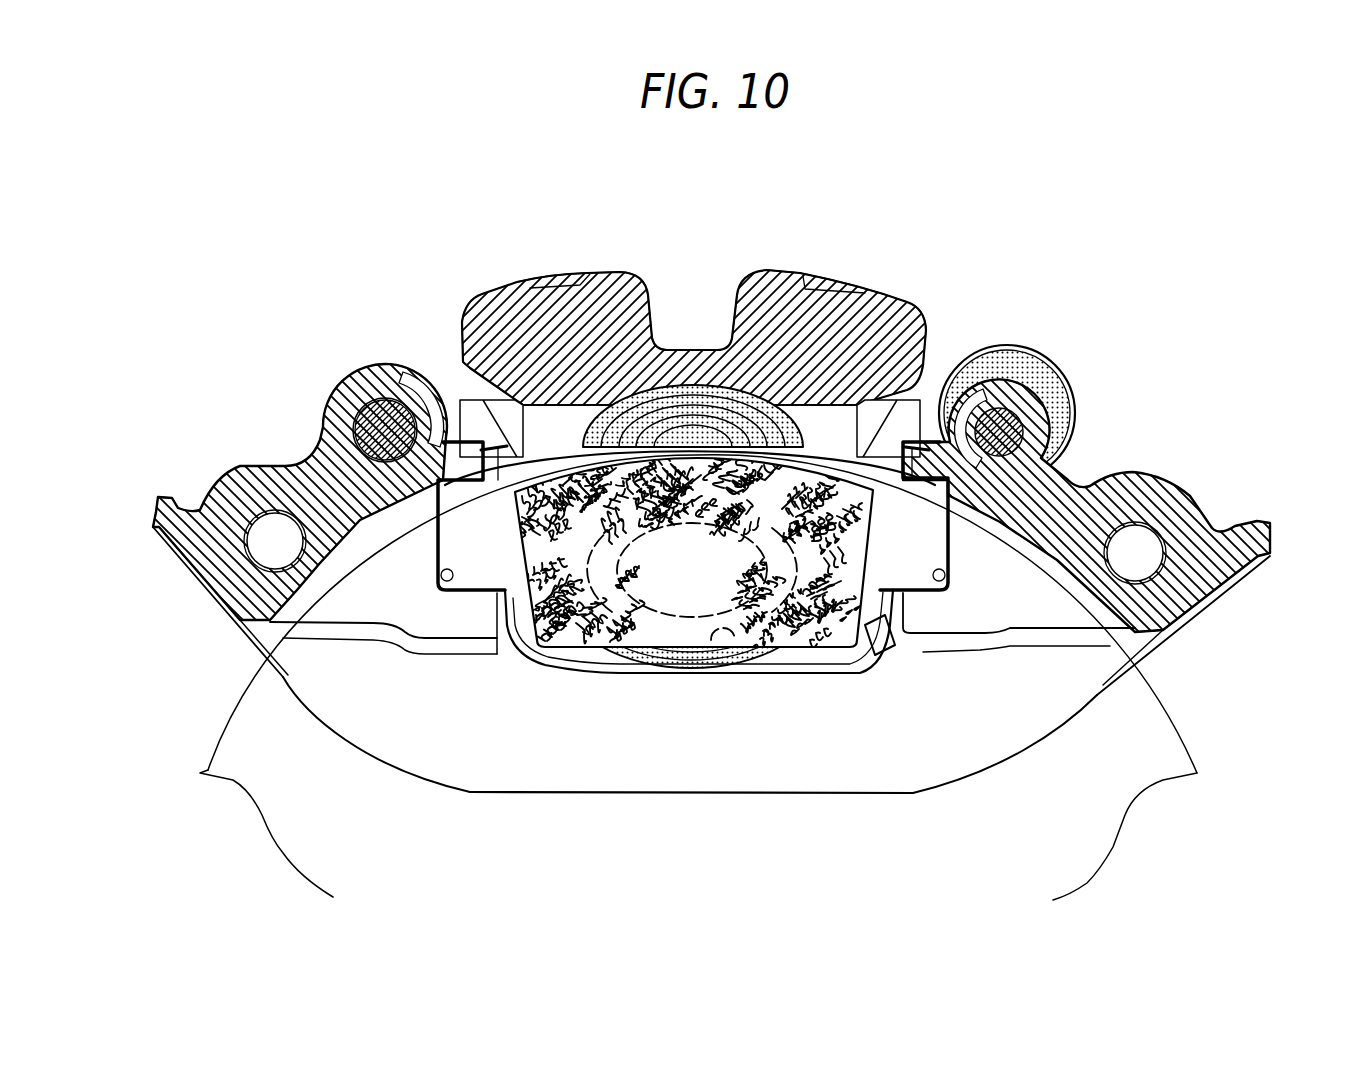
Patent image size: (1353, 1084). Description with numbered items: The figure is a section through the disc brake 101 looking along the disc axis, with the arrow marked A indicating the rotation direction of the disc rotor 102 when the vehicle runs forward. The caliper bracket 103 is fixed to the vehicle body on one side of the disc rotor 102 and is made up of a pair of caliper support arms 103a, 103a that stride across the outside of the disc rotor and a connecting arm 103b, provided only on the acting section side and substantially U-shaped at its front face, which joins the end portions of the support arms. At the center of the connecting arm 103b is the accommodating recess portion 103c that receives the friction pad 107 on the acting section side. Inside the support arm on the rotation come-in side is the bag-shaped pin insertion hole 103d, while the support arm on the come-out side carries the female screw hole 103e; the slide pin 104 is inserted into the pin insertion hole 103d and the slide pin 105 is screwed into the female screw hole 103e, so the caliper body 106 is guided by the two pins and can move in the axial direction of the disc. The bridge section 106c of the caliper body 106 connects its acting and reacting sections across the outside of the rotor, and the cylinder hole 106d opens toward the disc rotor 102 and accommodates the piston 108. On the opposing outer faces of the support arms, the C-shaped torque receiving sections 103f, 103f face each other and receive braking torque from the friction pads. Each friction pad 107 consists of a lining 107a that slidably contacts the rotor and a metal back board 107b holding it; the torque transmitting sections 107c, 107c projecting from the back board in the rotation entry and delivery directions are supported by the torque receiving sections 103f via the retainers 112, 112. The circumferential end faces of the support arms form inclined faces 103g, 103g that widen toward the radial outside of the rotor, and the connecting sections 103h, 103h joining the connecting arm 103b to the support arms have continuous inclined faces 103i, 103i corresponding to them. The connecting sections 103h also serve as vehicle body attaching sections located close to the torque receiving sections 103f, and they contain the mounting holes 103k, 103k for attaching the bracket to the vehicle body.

The disc brake 101 is at (972, 198).
The disc rotor 102 is at (237, 722).
The caliper bracket 103 is at (655, 812).
The caliper support arm 103a is at (315, 462).
The connecting arm 103b is at (778, 777).
The accommodating recess portion 103c is at (818, 662).
The pin insertion hole 103d is at (386, 398).
The female screw hole 103e is at (996, 408).
The torque receiving section 103f is at (445, 590).
The inclined face 103g is at (197, 577).
The connecting section 103h is at (250, 633).
The inclined face 103i is at (285, 688).
The mounting hole 103k is at (243, 466).
The slide pin 104 is at (360, 398).
The slide pin 105 is at (1040, 400).
The caliper body 106 is at (808, 243).
The bridge section 106c is at (608, 280).
The cylinder hole 106d is at (727, 672).
The friction pad 107 is at (630, 727).
The lining 107a is at (598, 652).
The back board 107b is at (560, 652).
The torque transmitting section 107c is at (437, 540).
The piston 108 is at (617, 568).
The retainer 112 is at (499, 452).